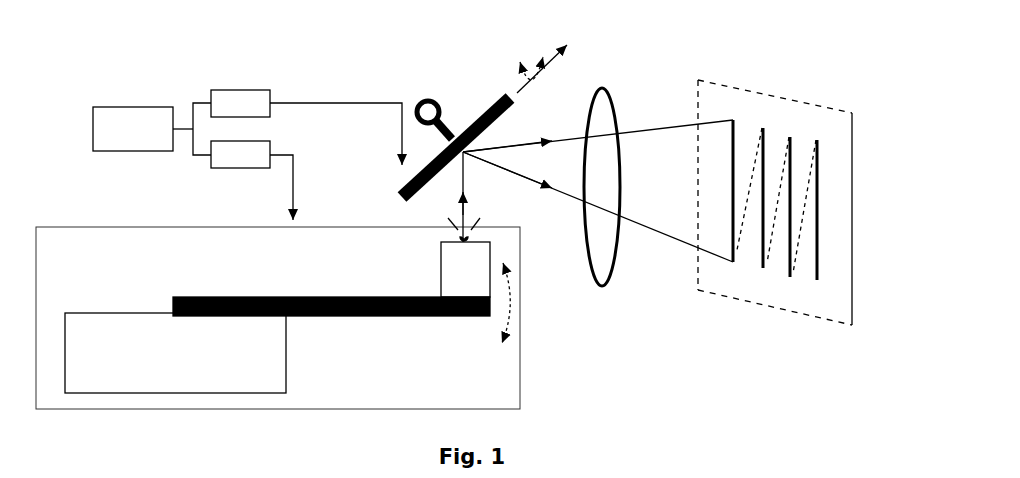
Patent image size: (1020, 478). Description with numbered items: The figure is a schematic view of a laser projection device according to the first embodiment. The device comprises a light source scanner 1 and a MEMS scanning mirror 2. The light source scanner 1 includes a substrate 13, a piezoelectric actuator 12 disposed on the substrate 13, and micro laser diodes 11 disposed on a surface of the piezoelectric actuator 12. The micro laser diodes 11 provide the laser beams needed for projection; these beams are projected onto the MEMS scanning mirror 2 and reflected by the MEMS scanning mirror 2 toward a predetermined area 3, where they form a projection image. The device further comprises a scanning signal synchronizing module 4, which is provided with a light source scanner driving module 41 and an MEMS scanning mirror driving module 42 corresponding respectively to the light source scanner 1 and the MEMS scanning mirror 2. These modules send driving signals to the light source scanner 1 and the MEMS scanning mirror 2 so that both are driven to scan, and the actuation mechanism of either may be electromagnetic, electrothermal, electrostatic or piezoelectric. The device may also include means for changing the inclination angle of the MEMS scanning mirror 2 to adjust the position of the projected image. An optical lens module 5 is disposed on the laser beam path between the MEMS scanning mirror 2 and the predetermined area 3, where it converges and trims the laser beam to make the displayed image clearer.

The light source scanner 1 is at (98, 228).
The micro laser diodes 11 is at (442, 272).
The piezoelectric actuator 12 is at (215, 298).
The substrate 13 is at (145, 352).
The MEMS scanning mirror 2 is at (437, 103).
The predetermined area 3 is at (828, 187).
The scanning signal synchronizing module 4 is at (133, 106).
The light source scanner driving module 41 is at (257, 91).
The MEMS scanning mirror driving module 42 is at (238, 167).
The optical lens module 5 is at (597, 277).